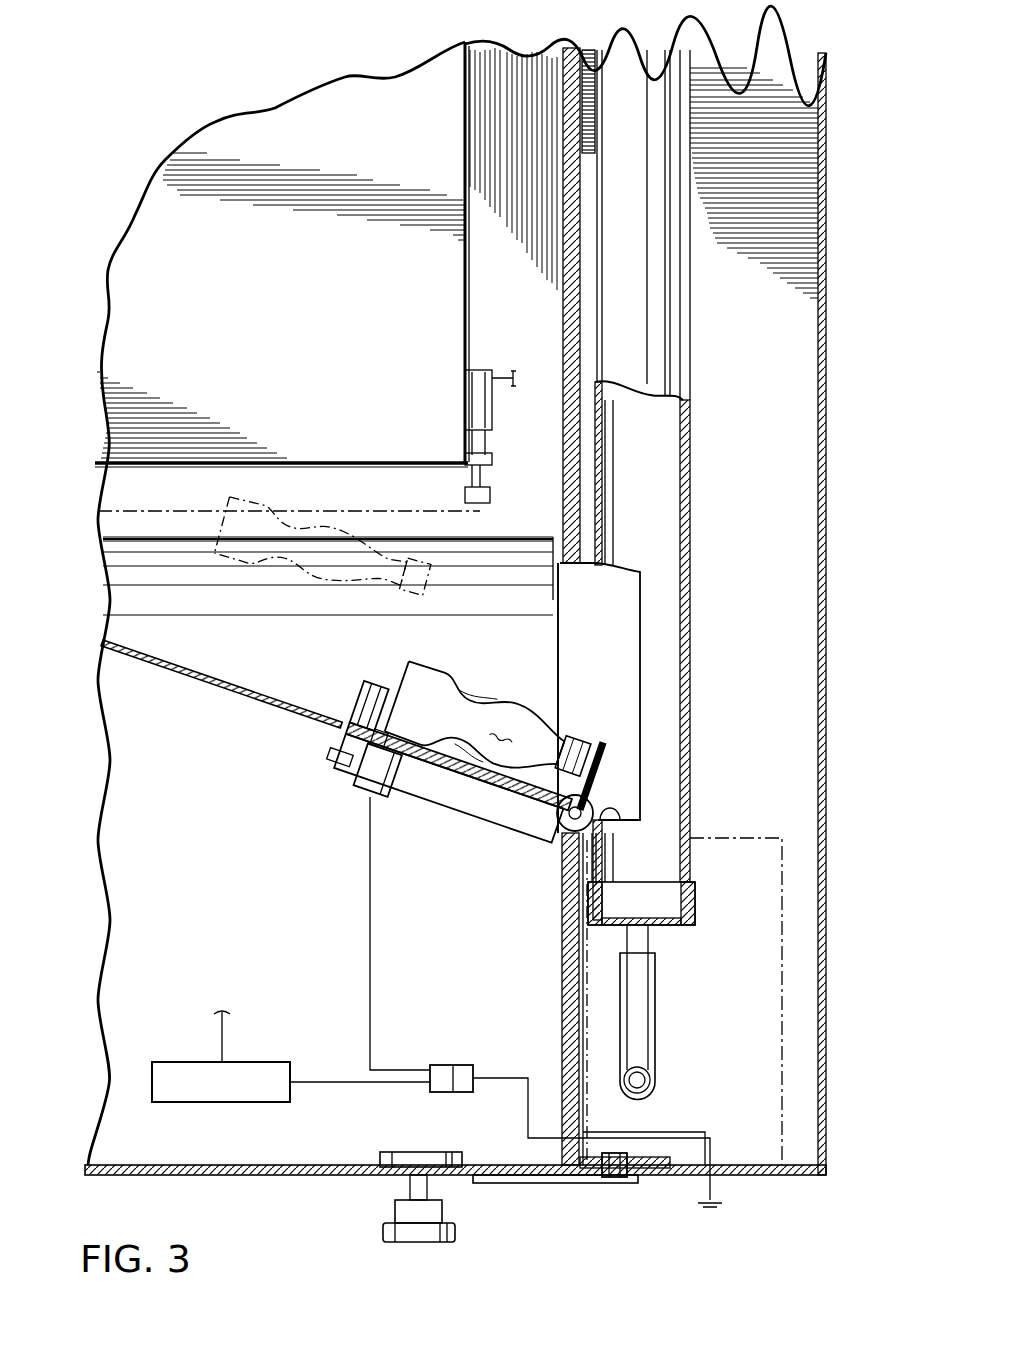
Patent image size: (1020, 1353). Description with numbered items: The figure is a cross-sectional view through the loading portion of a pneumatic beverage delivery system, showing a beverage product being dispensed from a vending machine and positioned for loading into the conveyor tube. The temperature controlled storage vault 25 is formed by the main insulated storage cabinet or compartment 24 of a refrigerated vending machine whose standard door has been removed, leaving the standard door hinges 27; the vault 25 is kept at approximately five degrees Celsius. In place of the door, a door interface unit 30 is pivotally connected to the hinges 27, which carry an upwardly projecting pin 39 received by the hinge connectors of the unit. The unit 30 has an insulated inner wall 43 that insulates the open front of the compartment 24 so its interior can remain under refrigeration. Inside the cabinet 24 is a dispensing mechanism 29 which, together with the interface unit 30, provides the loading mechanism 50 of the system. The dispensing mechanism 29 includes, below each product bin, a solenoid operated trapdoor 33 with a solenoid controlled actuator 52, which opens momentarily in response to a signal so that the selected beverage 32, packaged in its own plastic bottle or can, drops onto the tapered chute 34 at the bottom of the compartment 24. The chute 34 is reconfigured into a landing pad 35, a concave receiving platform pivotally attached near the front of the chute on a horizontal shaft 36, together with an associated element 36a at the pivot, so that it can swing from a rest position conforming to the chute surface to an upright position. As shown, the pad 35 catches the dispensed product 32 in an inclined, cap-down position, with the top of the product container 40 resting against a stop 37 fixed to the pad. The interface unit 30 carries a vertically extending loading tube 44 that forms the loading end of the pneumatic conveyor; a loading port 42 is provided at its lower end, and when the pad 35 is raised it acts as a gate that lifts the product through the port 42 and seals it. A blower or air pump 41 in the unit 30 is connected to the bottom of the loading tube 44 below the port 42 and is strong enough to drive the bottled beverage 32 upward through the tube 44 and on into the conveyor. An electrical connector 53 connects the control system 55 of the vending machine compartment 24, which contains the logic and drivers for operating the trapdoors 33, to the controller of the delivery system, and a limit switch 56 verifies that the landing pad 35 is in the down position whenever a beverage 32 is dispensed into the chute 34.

The main insulated storage cabinet 24 is at (500, 58).
The temperature controlled storage vault 25 is at (392, 74).
The door hinges 27 is at (546, 1188).
The dispensing mechanism 29 is at (115, 484).
The door interface unit 30 is at (832, 374).
The beverage 32 is at (595, 617).
The solenoid operated trapdoor 33 is at (203, 510).
The tapered chute 34 is at (362, 660).
The landing pad 35 is at (458, 772).
The horizontal shaft 36 is at (560, 823).
The pivot arm 36a is at (600, 810).
The stop 37 is at (608, 748).
The upwardly projecting pin 39 is at (626, 1160).
The product container 40 is at (609, 1172).
The blower 41 is at (782, 874).
The loading port 42 is at (648, 580).
The insulated inner wall 43 is at (560, 297).
The loading tube 44 is at (690, 518).
The loading mechanism 50 is at (720, 644).
The solenoid controlled actuator 52 is at (465, 392).
The electrical connector 53 is at (448, 1065).
The control system 55 is at (260, 1062).
The limit switch 56 is at (362, 780).